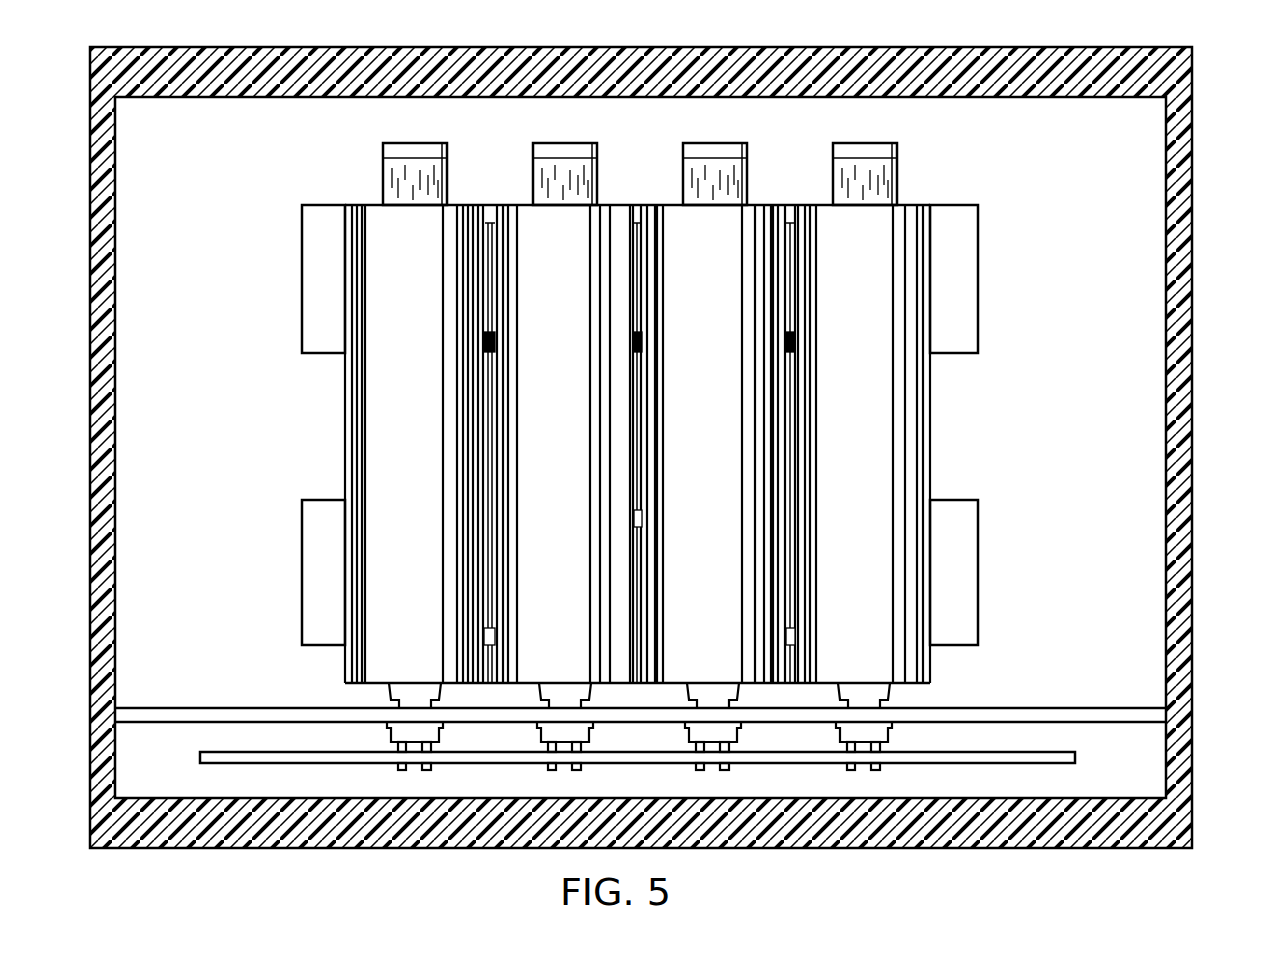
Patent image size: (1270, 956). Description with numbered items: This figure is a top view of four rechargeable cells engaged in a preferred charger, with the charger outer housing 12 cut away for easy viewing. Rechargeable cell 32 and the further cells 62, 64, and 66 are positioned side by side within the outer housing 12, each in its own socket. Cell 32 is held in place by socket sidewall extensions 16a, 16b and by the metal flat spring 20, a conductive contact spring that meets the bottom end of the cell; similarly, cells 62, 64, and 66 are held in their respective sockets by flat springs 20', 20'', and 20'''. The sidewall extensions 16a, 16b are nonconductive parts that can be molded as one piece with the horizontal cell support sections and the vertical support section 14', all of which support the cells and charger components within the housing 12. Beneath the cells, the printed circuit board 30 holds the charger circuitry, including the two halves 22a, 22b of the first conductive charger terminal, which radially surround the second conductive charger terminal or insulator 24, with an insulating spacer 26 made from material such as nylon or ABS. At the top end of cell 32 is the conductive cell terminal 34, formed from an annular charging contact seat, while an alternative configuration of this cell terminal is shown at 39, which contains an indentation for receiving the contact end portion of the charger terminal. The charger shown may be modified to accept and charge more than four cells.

The charger outer housing 12 is at (1197, 138).
The vertical support section 14' is at (640, 680).
The socket sidewall extension 16a is at (953, 290).
The socket sidewall extension 16b is at (953, 600).
The conductive contact spring 20 is at (881, 155).
The flat spring 20' is at (734, 155).
The flat spring 20'' is at (588, 155).
The flat spring 20''' is at (442, 155).
The charger terminal half 22a is at (848, 768).
The charger terminal half 22b is at (885, 768).
The second conductive charger terminal 24 is at (848, 746).
The spacer 26 is at (872, 733).
The printed circuit board 30 is at (1055, 764).
The rechargeable electrochemical cell 32 is at (870, 440).
The cell terminal 34 is at (888, 692).
The alternative cell terminal 39 is at (398, 697).
The rechargeable cell 62 is at (725, 245).
The rechargeable cell 64 is at (575, 245).
The rechargeable cell 66 is at (428, 240).